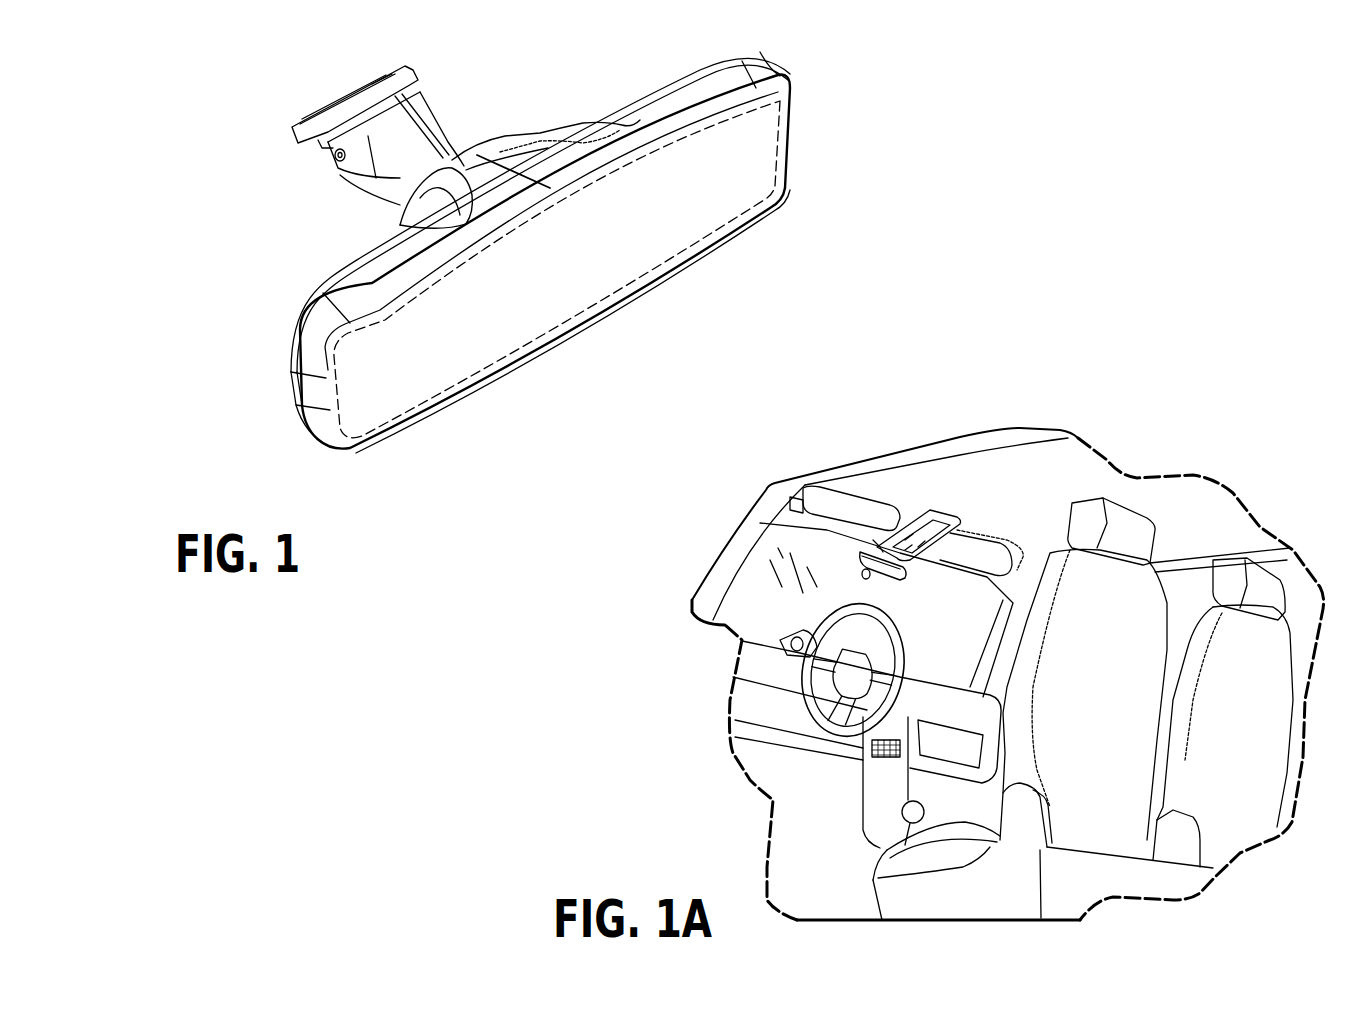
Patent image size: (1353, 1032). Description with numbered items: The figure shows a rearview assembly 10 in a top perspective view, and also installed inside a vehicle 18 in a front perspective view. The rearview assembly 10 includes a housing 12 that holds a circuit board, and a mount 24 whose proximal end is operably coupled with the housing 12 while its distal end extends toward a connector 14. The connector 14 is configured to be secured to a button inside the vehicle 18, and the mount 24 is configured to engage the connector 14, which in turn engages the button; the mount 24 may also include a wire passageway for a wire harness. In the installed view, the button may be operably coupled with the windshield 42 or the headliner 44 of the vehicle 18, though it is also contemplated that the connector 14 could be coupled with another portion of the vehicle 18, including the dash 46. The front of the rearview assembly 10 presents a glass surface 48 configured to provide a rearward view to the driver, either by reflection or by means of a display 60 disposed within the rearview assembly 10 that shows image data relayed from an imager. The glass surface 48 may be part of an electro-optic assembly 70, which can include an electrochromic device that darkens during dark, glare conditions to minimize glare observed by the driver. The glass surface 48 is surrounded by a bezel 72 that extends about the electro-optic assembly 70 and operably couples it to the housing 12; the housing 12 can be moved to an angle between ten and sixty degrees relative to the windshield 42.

In FIG. 1, the rearview assembly 10 is at (834, 122).
In FIG. 1A, the rearview assembly 10 is at (852, 555).
In FIG. 1, the housing 12 is at (626, 113).
In FIG. 1, the connector 14 is at (393, 90).
In FIG. 1A, the vehicle 18 is at (942, 440).
In FIG. 1, the mount 24 is at (374, 171).
In FIG. 1A, the windshield 42 is at (758, 587).
In FIG. 1A, the headliner 44 is at (1019, 510).
In FIG. 1A, the dash 46 is at (921, 688).
In FIG. 1, the glass surface 48 is at (557, 284).
In FIG. 1, the display 60 is at (443, 343).
In FIG. 1, the electro-optic assembly 70 is at (677, 260).
In FIG. 1, the bezel 72 is at (773, 64).